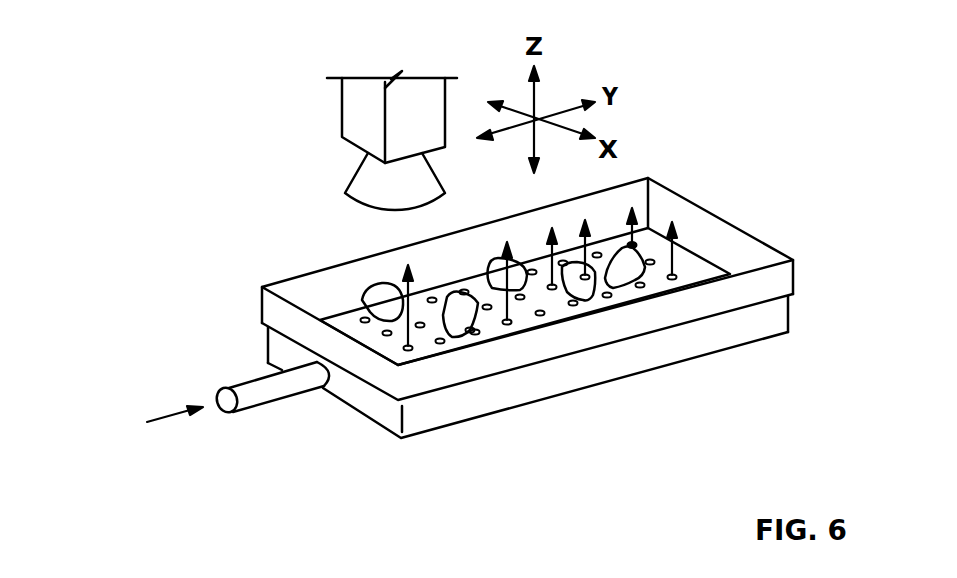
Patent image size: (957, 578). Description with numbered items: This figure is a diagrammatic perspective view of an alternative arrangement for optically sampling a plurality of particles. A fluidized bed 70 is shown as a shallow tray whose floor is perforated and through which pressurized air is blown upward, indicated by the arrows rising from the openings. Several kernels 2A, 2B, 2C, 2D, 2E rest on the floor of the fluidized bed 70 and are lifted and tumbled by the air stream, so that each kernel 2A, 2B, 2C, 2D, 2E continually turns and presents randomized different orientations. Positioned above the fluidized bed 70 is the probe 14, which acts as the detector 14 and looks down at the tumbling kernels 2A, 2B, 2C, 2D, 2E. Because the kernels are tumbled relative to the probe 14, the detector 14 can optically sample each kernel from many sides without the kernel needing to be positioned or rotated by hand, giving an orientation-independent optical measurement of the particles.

The probe 14 is at (358, 112).
The fluidized bed 70 is at (780, 282).
The kernel 2A is at (384, 300).
The kernel 2B is at (462, 312).
The kernel 2C is at (500, 275).
The kernel 2D is at (585, 292).
The kernel 2E is at (627, 268).